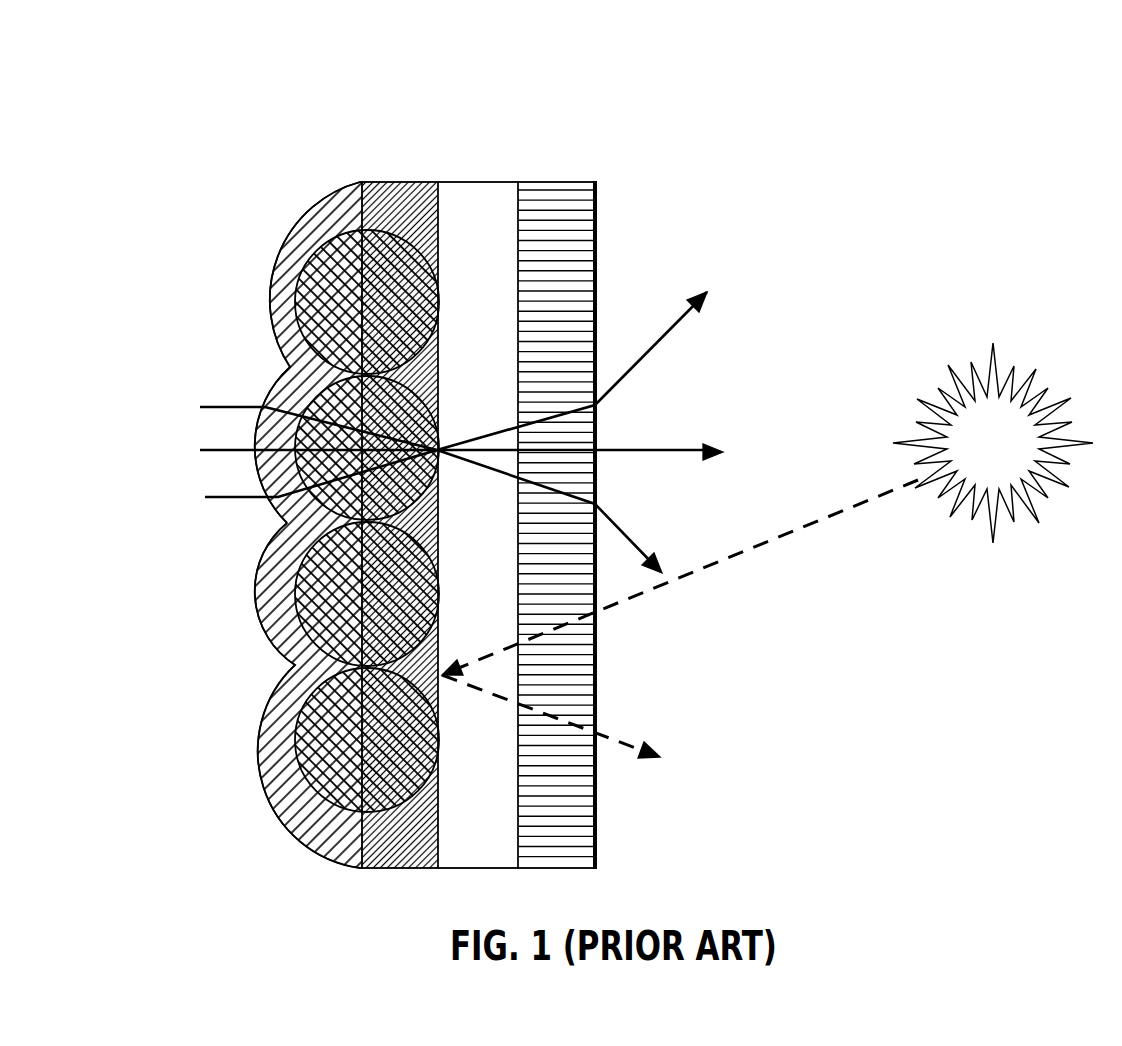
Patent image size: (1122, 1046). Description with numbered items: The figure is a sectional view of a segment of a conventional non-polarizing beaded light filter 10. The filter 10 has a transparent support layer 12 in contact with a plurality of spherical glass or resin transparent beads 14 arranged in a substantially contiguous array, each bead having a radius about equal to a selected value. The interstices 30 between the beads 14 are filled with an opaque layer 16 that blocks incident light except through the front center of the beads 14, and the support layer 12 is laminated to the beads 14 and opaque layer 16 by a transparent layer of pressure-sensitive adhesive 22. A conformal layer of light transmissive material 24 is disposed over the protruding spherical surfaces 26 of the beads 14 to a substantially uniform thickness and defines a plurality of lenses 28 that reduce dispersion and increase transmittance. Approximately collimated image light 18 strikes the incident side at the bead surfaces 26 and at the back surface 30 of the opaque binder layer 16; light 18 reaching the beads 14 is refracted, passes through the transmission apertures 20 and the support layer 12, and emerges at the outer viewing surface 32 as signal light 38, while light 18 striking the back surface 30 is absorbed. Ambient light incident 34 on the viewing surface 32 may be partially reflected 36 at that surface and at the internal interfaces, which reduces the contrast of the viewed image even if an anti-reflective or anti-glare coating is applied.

The non-polarizing beaded light filter 10 is at (632, 108).
The transparent support layer 12 is at (555, 182).
The transparent beads 14 is at (362, 257).
The opaque layer 16 is at (407, 182).
The light 18 is at (393, 432).
The transmission apertures 20 is at (519, 293).
The pressure-sensitive adhesive layer 22 is at (478, 182).
The conformal layer of light transmissive material 24 is at (300, 212).
The protruding spherical surfaces 26 is at (297, 730).
The lenses 28 is at (300, 272).
The interstices / back surface of opaque binder layer 30 is at (300, 665).
The outer surface of the support layer 32 is at (610, 183).
The incident ambient light 34 is at (837, 512).
The reflected ambient light 36 is at (612, 740).
The signal light 38 is at (658, 450).